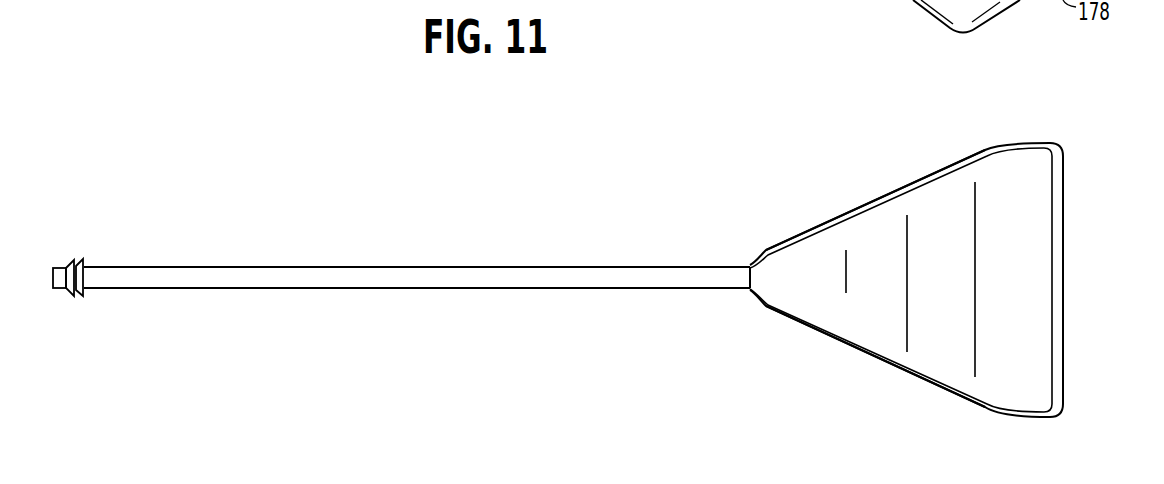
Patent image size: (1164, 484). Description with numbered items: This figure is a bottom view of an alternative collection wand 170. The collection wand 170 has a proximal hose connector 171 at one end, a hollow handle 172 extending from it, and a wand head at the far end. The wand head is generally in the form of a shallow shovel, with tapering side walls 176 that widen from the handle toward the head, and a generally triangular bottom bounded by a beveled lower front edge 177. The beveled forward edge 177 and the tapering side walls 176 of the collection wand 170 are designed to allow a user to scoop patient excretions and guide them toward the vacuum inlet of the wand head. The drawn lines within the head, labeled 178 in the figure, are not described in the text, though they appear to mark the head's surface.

The collection wand 170 is at (171, 152).
The proximal hose connector 171 is at (70, 294).
The hollow handle 172 is at (367, 279).
The tapering side walls 176 is at (860, 204).
The beveled lower front edge 177 is at (872, 328).
The blade 178 is at (1053, 268).